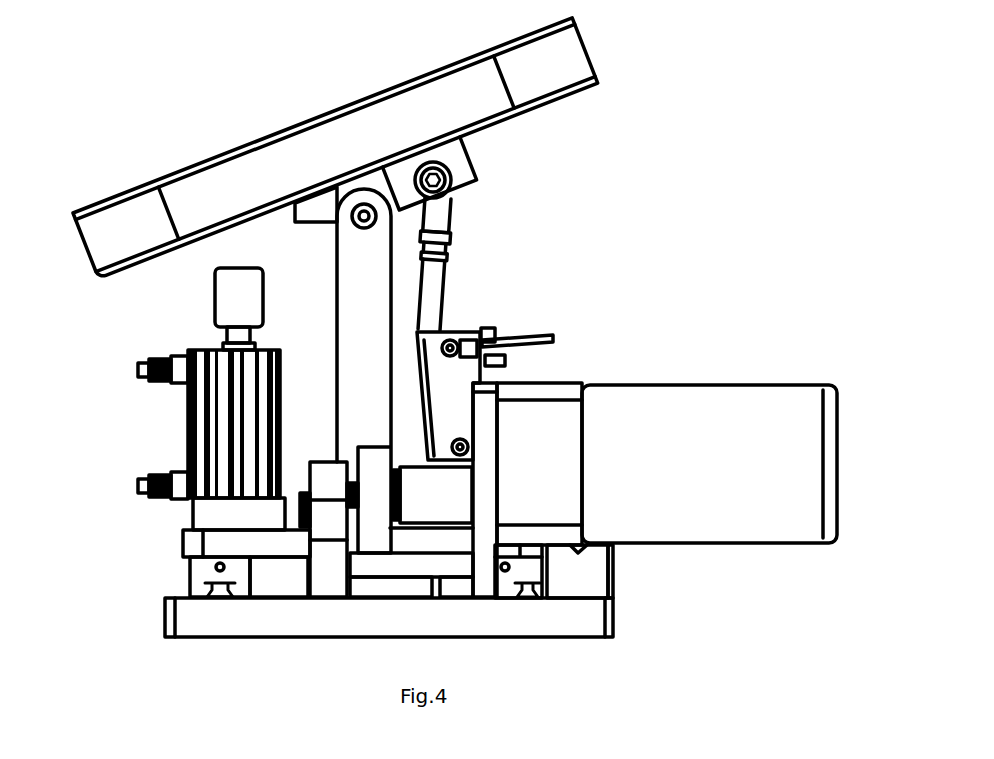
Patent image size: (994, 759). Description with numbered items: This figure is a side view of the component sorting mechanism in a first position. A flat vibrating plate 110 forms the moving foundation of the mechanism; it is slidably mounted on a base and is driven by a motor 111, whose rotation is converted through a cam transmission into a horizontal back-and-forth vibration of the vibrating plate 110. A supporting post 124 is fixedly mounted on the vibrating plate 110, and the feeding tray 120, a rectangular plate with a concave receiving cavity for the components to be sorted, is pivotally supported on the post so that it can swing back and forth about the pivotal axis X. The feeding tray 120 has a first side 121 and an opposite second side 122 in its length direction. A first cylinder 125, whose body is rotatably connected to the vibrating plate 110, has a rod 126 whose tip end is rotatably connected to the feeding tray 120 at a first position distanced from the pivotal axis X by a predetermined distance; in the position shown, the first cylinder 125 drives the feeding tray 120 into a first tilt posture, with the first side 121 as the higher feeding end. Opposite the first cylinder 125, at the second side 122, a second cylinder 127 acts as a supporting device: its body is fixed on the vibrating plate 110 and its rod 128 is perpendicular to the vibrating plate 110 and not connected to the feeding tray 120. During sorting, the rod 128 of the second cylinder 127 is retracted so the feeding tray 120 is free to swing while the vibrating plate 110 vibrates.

The vibrating plate 110 is at (222, 550).
The motor 111 is at (703, 423).
The feeding tray 120 is at (320, 140).
The first side 121 is at (560, 58).
The second side 122 is at (110, 238).
The supporting post 124 is at (358, 325).
The first cylinder 125 is at (462, 373).
The rod 126 is at (460, 278).
The second cylinder 127 is at (227, 425).
The rod 128 is at (230, 303).
The pivotal axis X is at (360, 222).